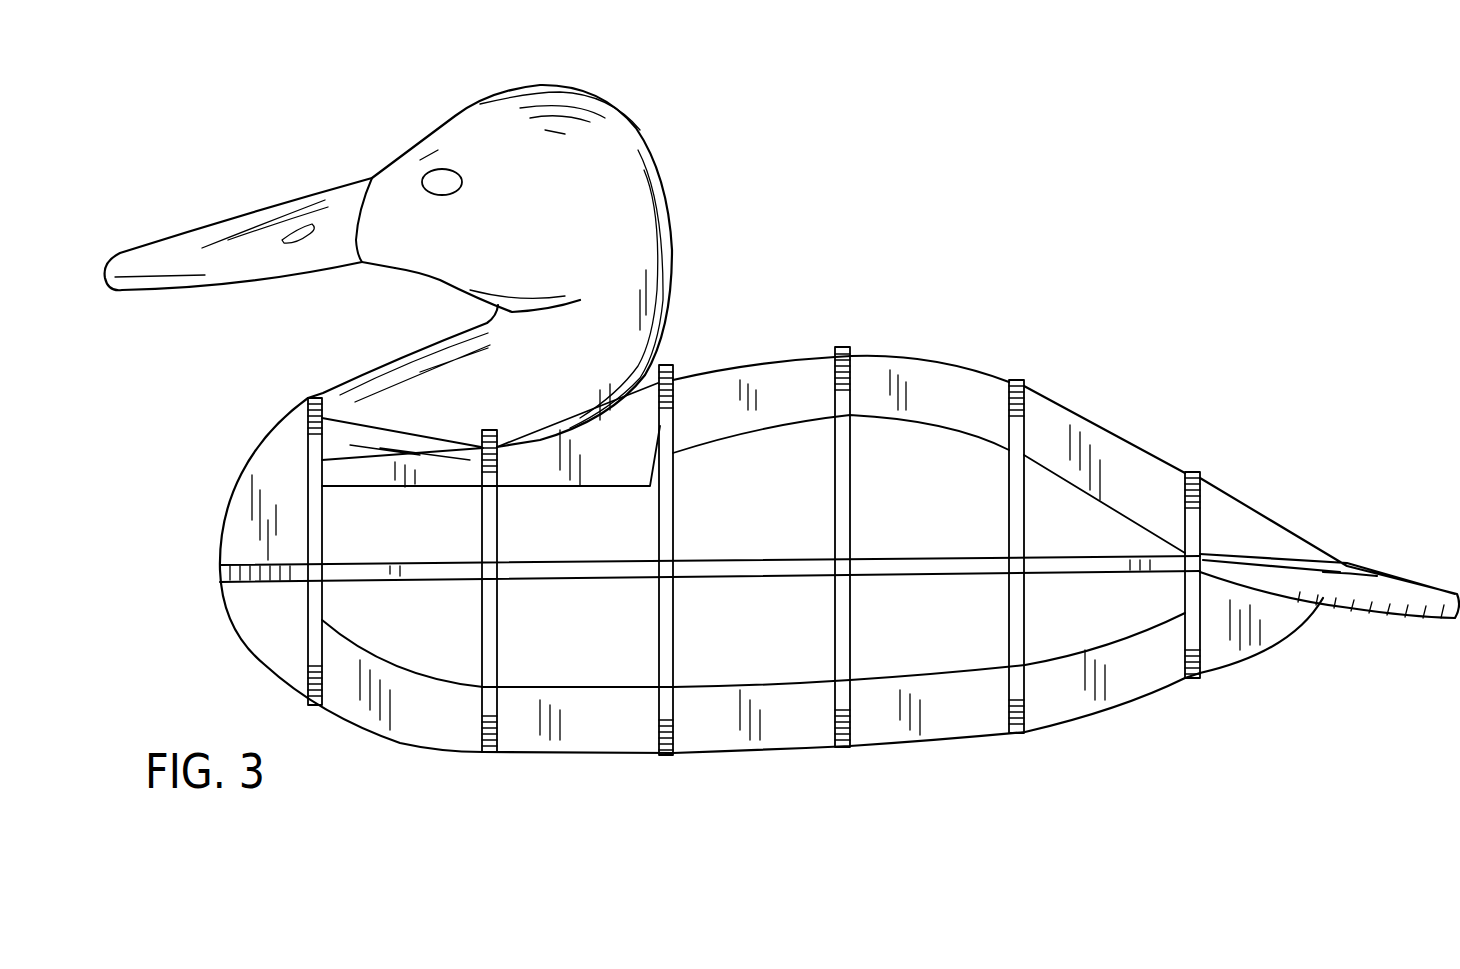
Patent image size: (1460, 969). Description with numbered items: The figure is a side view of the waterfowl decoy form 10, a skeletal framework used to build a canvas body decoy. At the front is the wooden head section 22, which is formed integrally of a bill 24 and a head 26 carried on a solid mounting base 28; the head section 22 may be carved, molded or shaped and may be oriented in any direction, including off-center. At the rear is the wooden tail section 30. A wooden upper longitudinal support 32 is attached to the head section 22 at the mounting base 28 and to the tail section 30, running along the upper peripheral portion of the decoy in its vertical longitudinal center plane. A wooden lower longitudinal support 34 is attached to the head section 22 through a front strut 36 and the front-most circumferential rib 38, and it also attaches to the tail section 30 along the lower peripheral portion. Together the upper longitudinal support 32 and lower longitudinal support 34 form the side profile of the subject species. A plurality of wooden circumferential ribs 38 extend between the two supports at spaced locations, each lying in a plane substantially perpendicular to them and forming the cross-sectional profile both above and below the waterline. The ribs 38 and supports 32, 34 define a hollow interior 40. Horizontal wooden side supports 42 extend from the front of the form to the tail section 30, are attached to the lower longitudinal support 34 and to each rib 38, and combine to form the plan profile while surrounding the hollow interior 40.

The waterfowl decoy form 10 is at (1160, 278).
The head section 22 is at (655, 148).
The bill 24 is at (243, 245).
The head 26 is at (655, 225).
The mounting base 28 is at (628, 420).
The tail section 30 is at (1375, 575).
The upper longitudinal support 32 is at (928, 393).
The lower longitudinal support 34 is at (890, 715).
The front strut 36 is at (253, 495).
The circumferential ribs 38 is at (848, 378).
The hollow interior 40 is at (730, 657).
The side supports 42 is at (1072, 565).